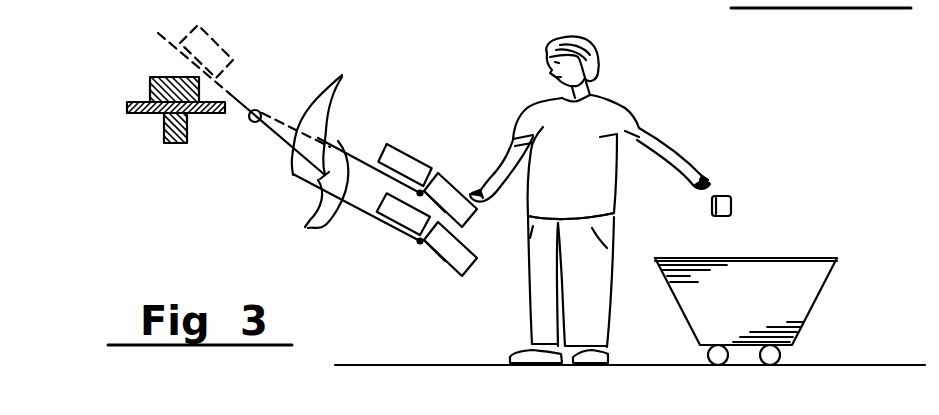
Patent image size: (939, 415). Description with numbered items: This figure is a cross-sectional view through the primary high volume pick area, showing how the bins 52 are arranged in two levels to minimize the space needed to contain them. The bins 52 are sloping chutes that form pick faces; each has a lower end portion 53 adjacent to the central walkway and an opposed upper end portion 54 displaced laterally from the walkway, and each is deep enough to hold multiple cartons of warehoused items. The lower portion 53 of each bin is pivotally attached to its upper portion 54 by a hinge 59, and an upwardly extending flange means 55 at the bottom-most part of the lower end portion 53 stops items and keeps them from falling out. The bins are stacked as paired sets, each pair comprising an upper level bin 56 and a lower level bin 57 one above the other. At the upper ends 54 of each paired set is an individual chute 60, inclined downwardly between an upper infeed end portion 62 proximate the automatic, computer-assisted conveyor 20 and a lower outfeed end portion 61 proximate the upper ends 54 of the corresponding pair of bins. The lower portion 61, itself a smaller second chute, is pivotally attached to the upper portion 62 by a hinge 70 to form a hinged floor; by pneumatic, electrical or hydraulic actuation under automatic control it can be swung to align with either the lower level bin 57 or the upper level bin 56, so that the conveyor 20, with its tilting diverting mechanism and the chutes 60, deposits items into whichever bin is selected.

The conveyor 20 is at (163, 123).
The hinge 70 is at (250, 119).
The chute 60 is at (265, 120).
The upper infeed end portion 62 is at (247, 106).
The upper end portion 54 is at (349, 74).
The bin 52 is at (322, 198).
The lower level bin 57 is at (310, 183).
The lower outfeed end portion 61 is at (338, 141).
The upper level bin 56 is at (385, 144).
The lower end portion 53 is at (447, 262).
The flange means 55 is at (475, 223).
The hinge 59 is at (420, 193).